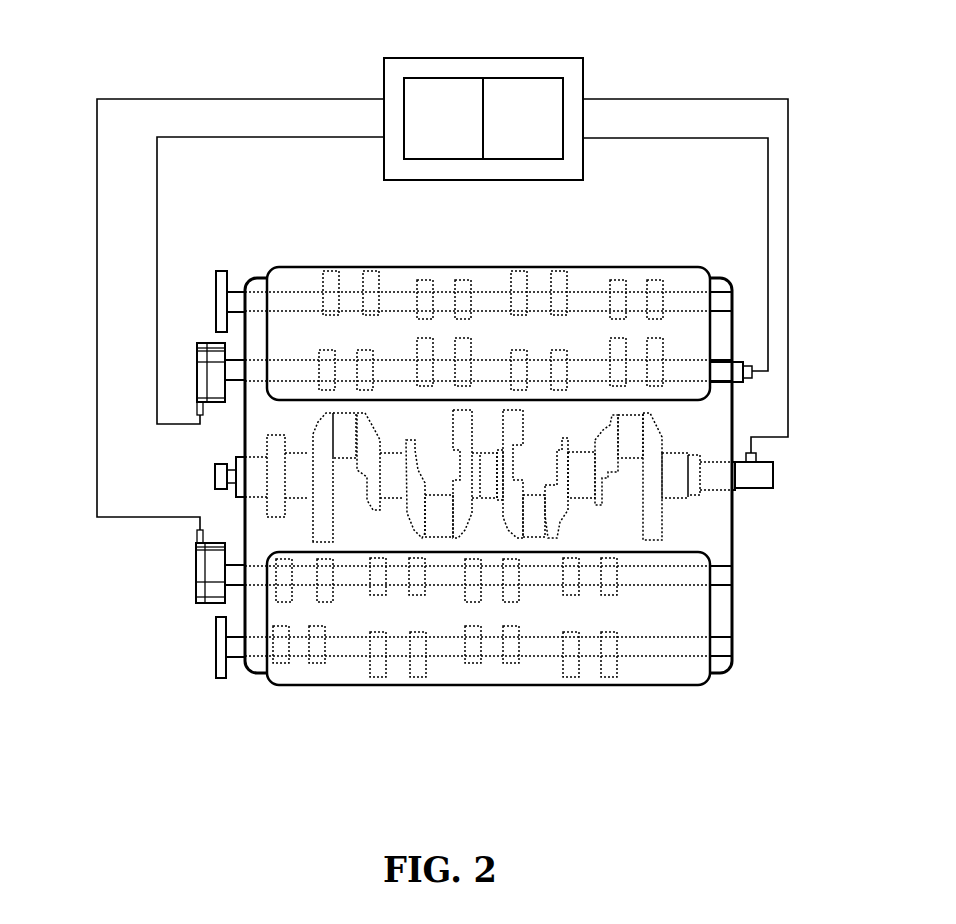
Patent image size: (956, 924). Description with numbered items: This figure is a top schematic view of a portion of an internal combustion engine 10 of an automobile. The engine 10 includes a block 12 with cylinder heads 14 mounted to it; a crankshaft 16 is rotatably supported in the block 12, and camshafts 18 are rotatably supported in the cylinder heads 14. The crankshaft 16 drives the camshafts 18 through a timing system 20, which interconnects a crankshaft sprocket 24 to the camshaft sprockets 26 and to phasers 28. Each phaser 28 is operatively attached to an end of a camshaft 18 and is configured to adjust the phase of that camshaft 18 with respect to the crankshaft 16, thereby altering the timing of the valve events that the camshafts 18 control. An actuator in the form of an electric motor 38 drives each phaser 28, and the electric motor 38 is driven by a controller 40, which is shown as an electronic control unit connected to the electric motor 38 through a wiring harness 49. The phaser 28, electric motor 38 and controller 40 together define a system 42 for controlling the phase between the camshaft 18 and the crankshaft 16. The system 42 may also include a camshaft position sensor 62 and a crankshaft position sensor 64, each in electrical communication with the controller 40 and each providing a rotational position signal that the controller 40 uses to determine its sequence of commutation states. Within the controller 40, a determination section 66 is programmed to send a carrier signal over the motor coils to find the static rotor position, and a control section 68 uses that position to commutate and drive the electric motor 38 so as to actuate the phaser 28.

The internal combustion engine 10 is at (475, 468).
The block 12 is at (725, 608).
The cylinder head 14 is at (697, 278).
The crankshaft 16 is at (663, 497).
The camshaft 18 is at (690, 373).
The timing system 20 is at (179, 471).
The crankshaft sprocket 24 is at (215, 472).
The camshaft sprocket 26 is at (221, 271).
The phaser 28 is at (212, 393).
The electric motor 38 is at (190, 464).
The controller 40 is at (506, 92).
The system 42 is at (421, 314).
The wiring harness 49 is at (97, 203).
The camshaft position sensor 62 is at (738, 372).
The crankshaft position sensor 64 is at (773, 475).
The determination section 66 is at (433, 127).
The control section 68 is at (515, 127).